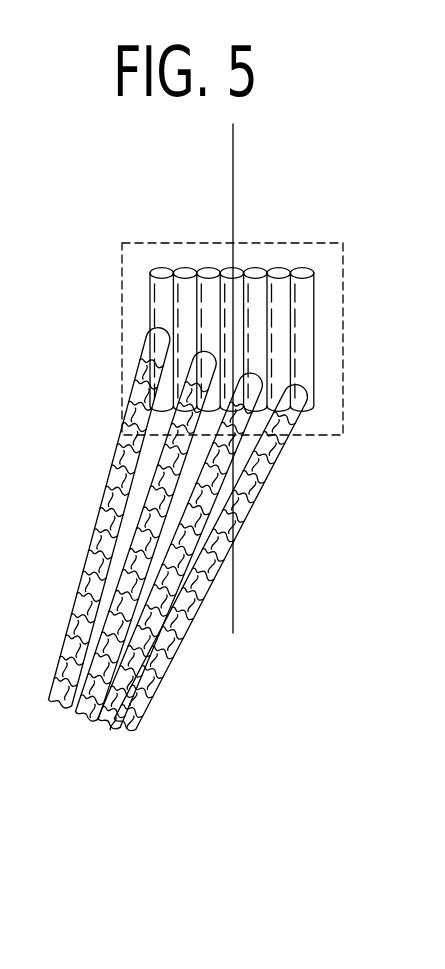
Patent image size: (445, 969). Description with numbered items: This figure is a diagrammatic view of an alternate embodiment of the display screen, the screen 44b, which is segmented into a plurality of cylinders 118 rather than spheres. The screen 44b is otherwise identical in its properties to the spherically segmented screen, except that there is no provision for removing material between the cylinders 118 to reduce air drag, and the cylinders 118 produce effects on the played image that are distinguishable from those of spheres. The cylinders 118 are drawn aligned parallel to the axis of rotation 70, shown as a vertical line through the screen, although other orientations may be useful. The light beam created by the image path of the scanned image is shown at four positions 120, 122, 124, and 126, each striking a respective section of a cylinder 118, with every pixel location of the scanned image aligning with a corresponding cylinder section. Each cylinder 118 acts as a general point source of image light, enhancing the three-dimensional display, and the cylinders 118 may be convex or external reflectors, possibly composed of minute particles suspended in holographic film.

The screen 44b is at (345, 243).
The axis of rotation 70 is at (235, 152).
The cylinders 118 is at (314, 318).
The light beam position 120 is at (97, 508).
The light beam position 122 is at (167, 488).
The light beam position 124 is at (244, 535).
The light beam position 126 is at (257, 556).